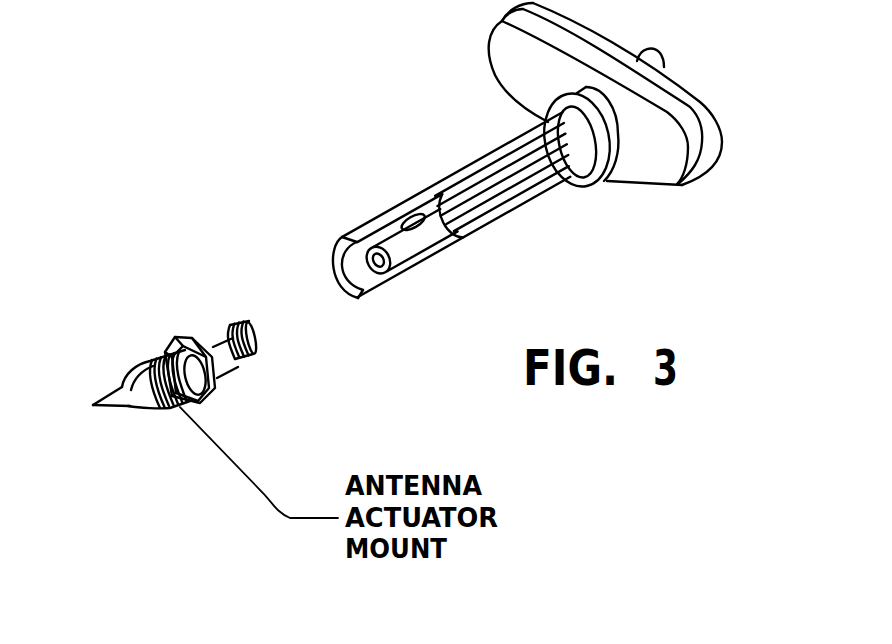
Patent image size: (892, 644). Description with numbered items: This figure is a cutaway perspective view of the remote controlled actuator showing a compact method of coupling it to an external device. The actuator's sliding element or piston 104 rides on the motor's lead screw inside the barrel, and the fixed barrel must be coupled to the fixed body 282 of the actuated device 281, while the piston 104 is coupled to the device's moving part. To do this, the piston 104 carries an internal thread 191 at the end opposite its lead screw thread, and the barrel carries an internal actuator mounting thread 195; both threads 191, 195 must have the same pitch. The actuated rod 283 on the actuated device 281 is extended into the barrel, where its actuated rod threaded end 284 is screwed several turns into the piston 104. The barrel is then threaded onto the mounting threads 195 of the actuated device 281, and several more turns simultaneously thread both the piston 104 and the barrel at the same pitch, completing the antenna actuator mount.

The piston 104 is at (452, 226).
The internal thread 191 is at (383, 261).
The internal actuator mounting thread 195 is at (362, 280).
The actuated device 281 is at (101, 389).
The fixed body 282 is at (135, 354).
The actuated rod 283 is at (205, 338).
The actuated rod threaded end 284 is at (251, 329).